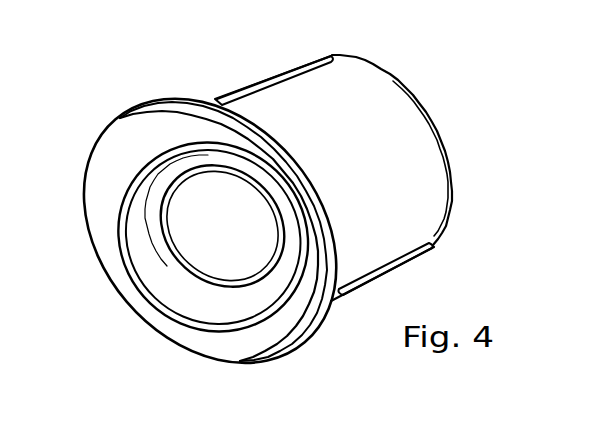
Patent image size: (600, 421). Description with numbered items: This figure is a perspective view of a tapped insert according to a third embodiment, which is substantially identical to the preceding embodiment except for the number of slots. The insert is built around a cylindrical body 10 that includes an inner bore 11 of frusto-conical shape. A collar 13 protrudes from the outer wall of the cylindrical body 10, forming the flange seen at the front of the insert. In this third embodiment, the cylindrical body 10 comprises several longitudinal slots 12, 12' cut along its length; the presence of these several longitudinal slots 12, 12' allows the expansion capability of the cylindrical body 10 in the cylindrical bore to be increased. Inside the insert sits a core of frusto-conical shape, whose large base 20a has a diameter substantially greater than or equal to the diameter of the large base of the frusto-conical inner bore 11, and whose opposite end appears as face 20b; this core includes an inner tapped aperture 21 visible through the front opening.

The cylindrical body 10 is at (453, 232).
The inner bore 11 is at (125, 225).
The longitudinal slot 12 is at (274, 58).
The longitudinal slot 12' is at (416, 269).
The collar 13 is at (128, 145).
The large base of the core of frusto-conical shape 20a is at (443, 130).
The front end face 20b is at (213, 293).
The inner tapped aperture 21 is at (219, 237).